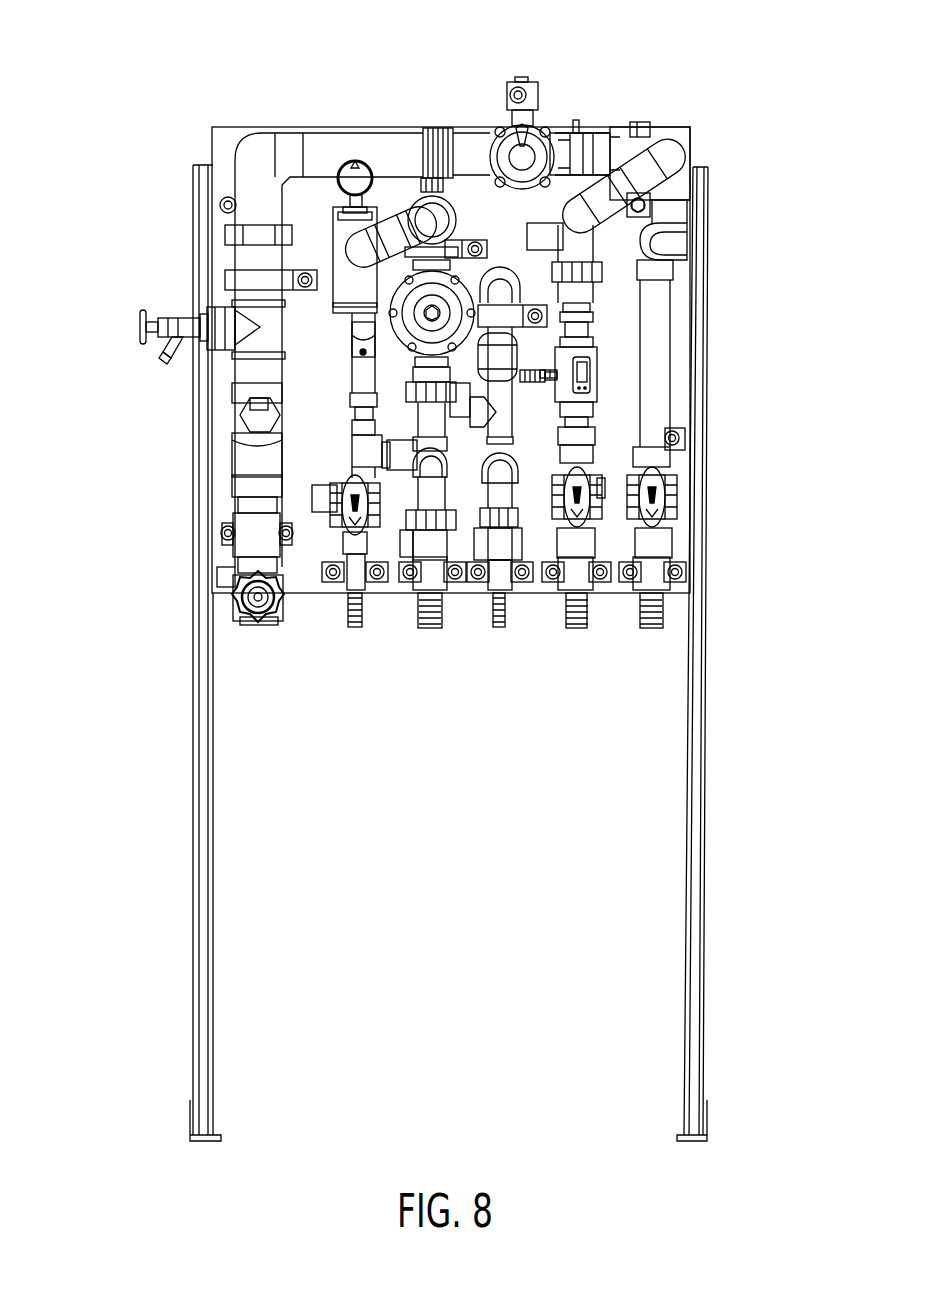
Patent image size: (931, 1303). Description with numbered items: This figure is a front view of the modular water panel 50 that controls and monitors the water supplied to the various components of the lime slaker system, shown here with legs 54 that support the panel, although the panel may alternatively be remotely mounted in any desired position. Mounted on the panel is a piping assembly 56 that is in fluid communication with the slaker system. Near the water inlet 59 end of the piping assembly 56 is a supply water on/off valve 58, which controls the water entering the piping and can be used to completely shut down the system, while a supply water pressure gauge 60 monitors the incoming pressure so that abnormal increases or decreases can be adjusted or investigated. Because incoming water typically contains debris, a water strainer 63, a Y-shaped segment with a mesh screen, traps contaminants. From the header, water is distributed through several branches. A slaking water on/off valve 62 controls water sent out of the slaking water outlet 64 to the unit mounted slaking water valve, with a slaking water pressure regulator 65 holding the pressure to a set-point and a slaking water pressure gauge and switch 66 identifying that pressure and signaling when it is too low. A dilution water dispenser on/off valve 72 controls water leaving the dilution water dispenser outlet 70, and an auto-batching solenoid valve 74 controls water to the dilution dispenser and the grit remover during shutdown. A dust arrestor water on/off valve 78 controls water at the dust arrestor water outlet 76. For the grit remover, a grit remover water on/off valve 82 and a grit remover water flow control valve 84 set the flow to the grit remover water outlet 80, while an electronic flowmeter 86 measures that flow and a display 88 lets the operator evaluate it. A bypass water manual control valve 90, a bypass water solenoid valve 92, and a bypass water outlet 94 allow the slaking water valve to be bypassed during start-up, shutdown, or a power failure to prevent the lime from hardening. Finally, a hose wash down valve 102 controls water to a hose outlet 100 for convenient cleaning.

The modular water panel 50 is at (255, 94).
The legs 54 is at (193, 790).
The piping assembly 56 is at (385, 128).
The supply water on/off valve 58 is at (233, 595).
The water inlet 59 is at (272, 626).
The supply water pressure gauge 60 is at (333, 127).
The slaking water on/off valve 62 is at (425, 128).
The water strainer 63 is at (247, 413).
The slaking water outlet 64 is at (432, 630).
The slaking water pressure regulator 65 is at (462, 283).
The slaking water pressure gauge and switch 66 is at (353, 310).
The dilution water dispenser outlet 70 is at (652, 630).
The dilution water dispenser on/off valve 72 is at (668, 478).
The auto-batching solenoid valve 74 is at (535, 95).
The dust arrestor water outlet 76 is at (355, 630).
The dust arrestor water on/off valve 78 is at (347, 507).
The grit remover water outlet 80 is at (576, 630).
The grit remover water on/off valve 82 is at (596, 470).
The grit remover water flow control valve 84 is at (590, 128).
The electronic flowmeter 86 is at (597, 355).
The display 88 is at (583, 375).
The bypass water manual control valve 90 is at (517, 483).
The bypass water solenoid valve 92 is at (518, 333).
The bypass water outlet 94 is at (500, 627).
The hose outlet 100 is at (170, 350).
The hose wash down valve 102 is at (141, 318).